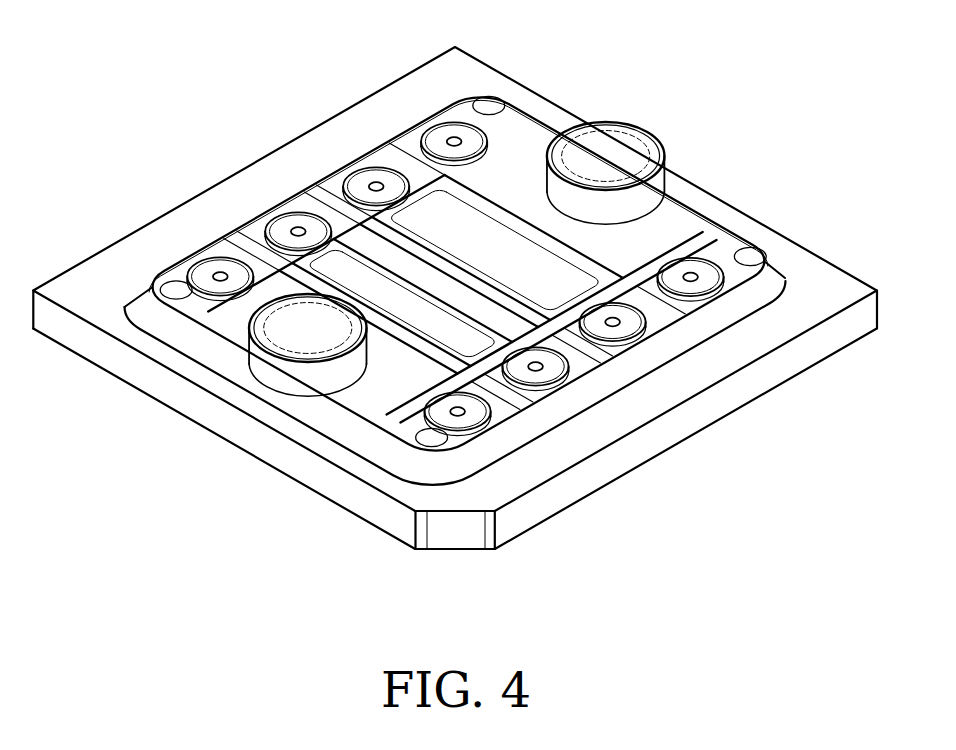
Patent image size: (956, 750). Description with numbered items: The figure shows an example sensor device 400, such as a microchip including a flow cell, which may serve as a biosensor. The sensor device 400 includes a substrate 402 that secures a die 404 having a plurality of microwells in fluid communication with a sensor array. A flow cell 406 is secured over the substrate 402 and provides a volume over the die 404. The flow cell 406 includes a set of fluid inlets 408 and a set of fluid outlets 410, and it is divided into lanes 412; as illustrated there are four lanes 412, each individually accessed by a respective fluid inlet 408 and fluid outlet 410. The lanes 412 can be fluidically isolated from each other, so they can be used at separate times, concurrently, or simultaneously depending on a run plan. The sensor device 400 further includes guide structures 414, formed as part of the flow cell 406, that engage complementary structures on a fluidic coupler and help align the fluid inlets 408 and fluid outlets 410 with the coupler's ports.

The sensor device 400 is at (186, 66).
The substrate 402 is at (97, 253).
The die 404 is at (177, 328).
The flow cell 406 is at (320, 417).
The fluid inlets 408 is at (457, 138).
The fluid outlets 410 is at (466, 426).
The lanes 412 is at (520, 175).
The guide structures 414 is at (664, 150).